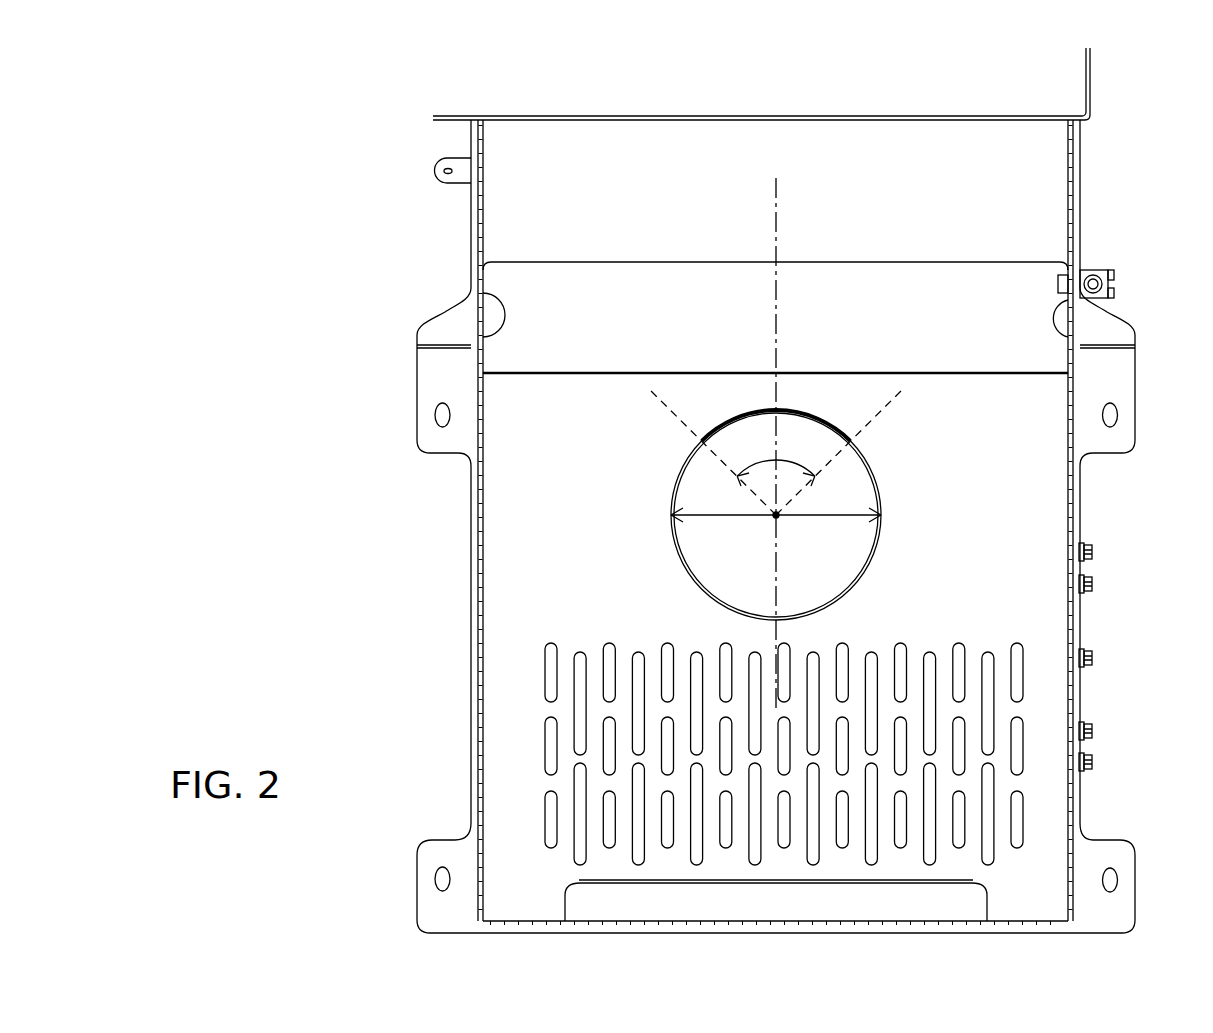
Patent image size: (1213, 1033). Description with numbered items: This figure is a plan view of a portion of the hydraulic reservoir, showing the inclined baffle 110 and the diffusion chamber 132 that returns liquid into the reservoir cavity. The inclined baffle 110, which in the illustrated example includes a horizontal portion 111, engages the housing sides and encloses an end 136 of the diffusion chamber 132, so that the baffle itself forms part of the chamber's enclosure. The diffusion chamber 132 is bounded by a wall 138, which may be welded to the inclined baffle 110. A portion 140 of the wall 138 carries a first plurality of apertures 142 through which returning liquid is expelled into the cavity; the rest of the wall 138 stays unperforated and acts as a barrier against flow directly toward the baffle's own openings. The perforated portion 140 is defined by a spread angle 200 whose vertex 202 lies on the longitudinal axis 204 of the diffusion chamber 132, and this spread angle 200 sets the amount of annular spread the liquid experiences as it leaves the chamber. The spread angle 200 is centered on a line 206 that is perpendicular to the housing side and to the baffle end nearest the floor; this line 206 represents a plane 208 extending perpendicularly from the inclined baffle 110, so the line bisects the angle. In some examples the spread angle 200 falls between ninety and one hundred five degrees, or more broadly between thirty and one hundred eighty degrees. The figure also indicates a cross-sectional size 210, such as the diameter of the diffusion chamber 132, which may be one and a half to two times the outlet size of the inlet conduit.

The inclined baffle 110 is at (1075, 185).
The horizontal portion 111 is at (698, 202).
The diffusion chamber 132 is at (851, 515).
The end 136 is at (760, 577).
The wall 138 is at (879, 485).
The portion 140 is at (823, 373).
The first plurality of apertures 142 is at (810, 414).
The spread angle 200 is at (760, 466).
The vertex 202 is at (899, 557).
The longitudinal axis 204 is at (778, 516).
The line 206 is at (860, 116).
The plane 208 is at (778, 226).
The cross-sectional size 210 is at (728, 515).